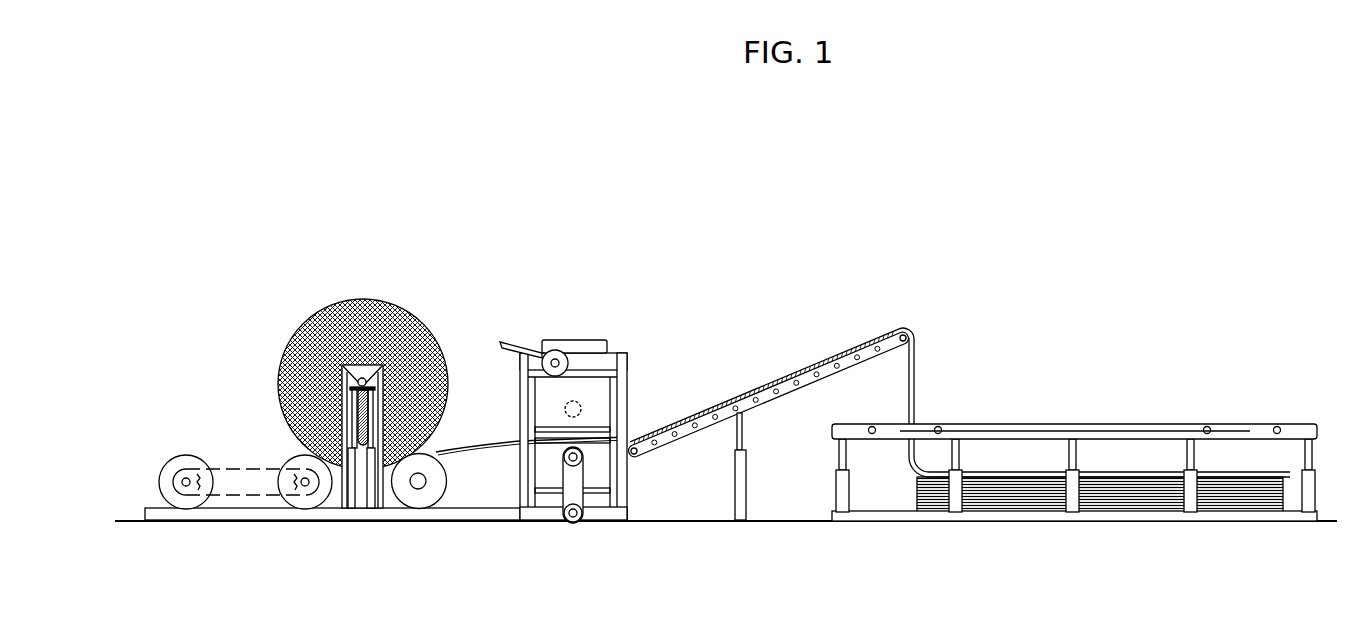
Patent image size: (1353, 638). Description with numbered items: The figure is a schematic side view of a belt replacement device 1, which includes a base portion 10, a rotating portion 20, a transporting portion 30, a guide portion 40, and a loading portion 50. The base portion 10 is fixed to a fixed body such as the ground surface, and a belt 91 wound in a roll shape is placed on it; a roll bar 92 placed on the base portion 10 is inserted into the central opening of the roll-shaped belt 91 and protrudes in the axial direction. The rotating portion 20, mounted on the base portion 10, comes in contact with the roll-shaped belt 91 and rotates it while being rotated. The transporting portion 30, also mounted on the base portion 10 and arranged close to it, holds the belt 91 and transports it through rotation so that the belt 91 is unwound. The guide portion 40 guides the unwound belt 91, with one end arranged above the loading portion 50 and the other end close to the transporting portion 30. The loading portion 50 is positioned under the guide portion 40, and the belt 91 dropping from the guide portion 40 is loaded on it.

The belt replacement device 1 is at (1187, 170).
The base portion 10 is at (261, 524).
The rotating portion 20 is at (433, 514).
The transporting portion 30 is at (579, 332).
The guide portion 40 is at (703, 432).
The loading portion 50 is at (1305, 419).
The belt 91 is at (434, 338).
The roll bar 92 is at (359, 379).